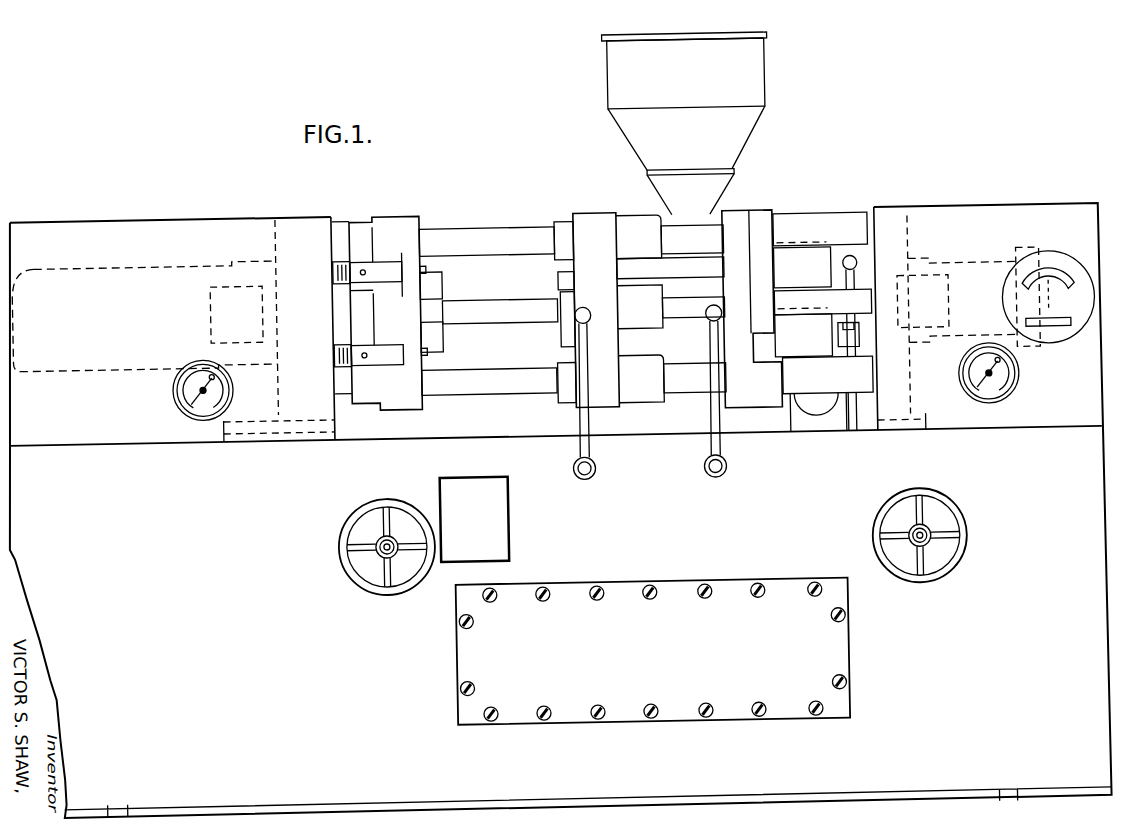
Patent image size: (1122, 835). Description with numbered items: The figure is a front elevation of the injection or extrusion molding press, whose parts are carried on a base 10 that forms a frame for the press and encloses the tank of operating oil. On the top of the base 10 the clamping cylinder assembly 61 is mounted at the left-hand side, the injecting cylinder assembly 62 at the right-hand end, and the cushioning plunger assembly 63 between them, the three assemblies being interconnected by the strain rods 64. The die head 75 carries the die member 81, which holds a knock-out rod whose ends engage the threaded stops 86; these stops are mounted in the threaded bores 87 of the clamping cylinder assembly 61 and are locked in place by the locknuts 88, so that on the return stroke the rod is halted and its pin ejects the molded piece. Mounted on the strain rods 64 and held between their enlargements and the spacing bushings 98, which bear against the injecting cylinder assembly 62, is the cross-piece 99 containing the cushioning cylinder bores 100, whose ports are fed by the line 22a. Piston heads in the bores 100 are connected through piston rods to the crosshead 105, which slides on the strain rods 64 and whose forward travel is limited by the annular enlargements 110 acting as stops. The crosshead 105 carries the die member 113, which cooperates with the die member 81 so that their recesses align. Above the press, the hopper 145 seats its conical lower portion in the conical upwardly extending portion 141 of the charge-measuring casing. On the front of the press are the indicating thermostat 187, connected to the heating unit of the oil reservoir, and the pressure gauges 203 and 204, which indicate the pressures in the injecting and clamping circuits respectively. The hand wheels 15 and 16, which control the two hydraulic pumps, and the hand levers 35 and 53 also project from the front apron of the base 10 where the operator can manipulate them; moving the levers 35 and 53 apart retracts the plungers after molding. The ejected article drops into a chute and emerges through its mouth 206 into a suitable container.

The base 10 is at (977, 646).
The hand wheel 15 is at (961, 538).
The hand wheel 16 is at (400, 507).
The line 22a is at (851, 446).
The hand lever 35 is at (725, 458).
The hand lever 53 is at (578, 458).
The clamping cylinder assembly 61 is at (140, 270).
The injecting cylinder assembly 62 is at (978, 278).
The cushioning plunger assembly 63 is at (636, 227).
The strain rods 64 is at (498, 240).
The die head 75 is at (419, 228).
The die member 81 is at (446, 295).
The threaded stops 86 is at (390, 272).
The threaded bores 87 is at (338, 230).
The locknuts 88 is at (336, 270).
The spacing bushings 98 is at (812, 230).
The cross-piece 99 is at (774, 224).
The cushioning cylinder bores 100 is at (826, 273).
The crosshead 105 is at (577, 225).
The annular enlargements 110 is at (559, 236).
The die member 113 is at (561, 290).
The conical upwardly extending portion 141 is at (742, 199).
The hopper 145 is at (763, 85).
The indicating thermostat 187 is at (1062, 272).
The pressure gauge 203 is at (1021, 392).
The pressure gauge 204 is at (183, 377).
The mouth 206 is at (508, 540).